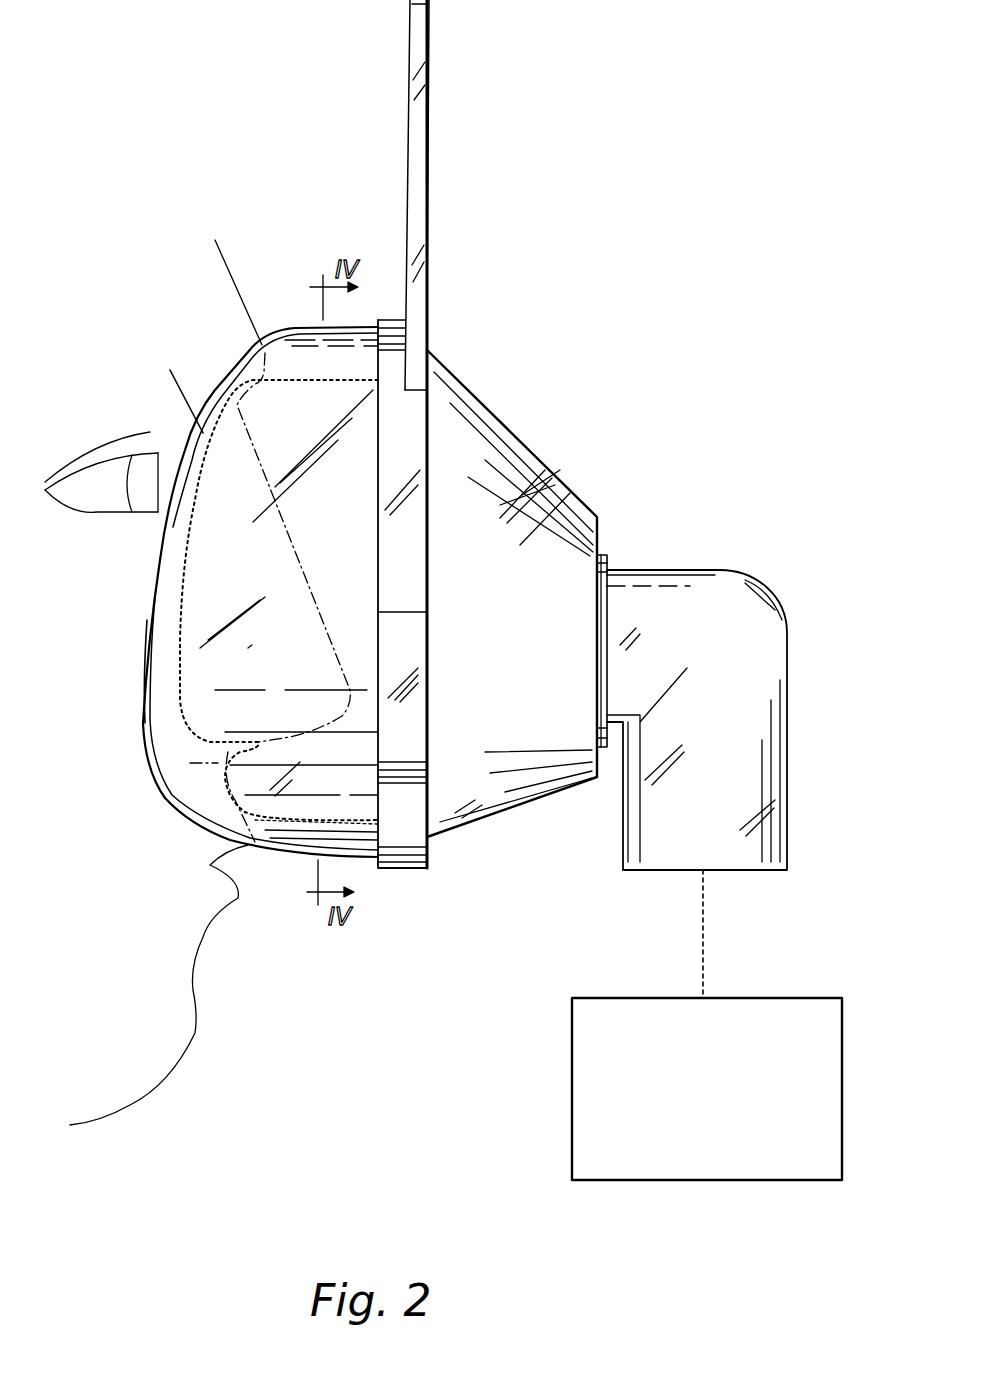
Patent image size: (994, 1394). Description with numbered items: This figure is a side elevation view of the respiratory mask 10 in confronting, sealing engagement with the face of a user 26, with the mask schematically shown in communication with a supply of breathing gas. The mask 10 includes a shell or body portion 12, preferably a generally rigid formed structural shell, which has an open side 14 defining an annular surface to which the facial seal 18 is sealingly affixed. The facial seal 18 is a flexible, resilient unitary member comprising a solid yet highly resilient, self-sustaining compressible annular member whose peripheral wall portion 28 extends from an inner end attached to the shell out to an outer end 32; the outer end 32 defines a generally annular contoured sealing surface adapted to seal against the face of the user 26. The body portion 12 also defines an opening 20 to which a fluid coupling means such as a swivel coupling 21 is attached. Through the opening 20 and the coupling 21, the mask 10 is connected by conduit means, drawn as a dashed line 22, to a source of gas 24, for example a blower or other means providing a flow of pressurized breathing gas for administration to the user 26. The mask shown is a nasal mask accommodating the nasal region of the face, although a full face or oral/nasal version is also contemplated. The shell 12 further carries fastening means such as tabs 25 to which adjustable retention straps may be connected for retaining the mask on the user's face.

The respiratory mask 10 is at (570, 212).
The shell or body portion 12 is at (530, 448).
The open side 14 is at (445, 353).
The facial seal 18 is at (283, 318).
The opening 20 is at (600, 540).
The swivel coupling 21 is at (742, 607).
The conduit means 22 is at (703, 943).
The source of gas 24 is at (697, 1180).
The tabs 25 is at (422, 180).
The user 26 is at (216, 1004).
The peripheral wall portion 28 is at (260, 852).
The outer end 32 is at (147, 620).